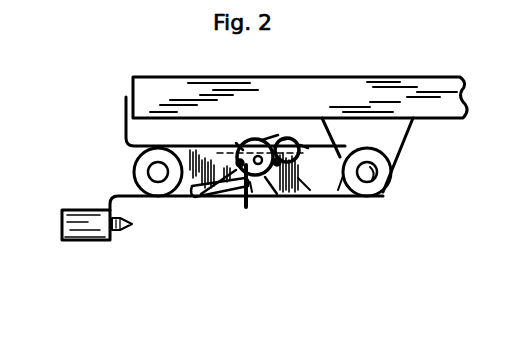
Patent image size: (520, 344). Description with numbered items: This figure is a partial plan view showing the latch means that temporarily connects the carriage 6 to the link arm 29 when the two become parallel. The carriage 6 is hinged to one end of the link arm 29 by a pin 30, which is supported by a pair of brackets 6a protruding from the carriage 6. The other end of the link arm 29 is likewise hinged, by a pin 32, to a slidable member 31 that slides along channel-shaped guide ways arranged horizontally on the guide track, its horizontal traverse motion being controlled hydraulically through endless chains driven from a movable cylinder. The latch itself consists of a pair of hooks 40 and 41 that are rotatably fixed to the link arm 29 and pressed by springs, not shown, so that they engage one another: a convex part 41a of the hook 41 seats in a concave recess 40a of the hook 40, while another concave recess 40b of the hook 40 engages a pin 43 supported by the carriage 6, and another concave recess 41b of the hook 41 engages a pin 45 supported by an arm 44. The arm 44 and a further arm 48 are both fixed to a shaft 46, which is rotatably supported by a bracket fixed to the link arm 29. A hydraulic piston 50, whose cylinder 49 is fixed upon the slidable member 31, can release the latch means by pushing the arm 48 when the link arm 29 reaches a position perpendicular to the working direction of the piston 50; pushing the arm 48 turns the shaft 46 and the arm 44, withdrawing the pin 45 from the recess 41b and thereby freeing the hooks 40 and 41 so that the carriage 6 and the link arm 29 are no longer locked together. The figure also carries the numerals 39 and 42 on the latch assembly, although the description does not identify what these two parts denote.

The carriage 6 is at (437, 85).
The brackets 6a is at (398, 142).
The link arm 29 is at (338, 190).
The pin 30 is at (382, 188).
The slidable member 31 is at (120, 130).
The pin 32 is at (157, 172).
The pivot pin 39 is at (252, 192).
The hook 40 is at (247, 140).
The concave recess 40a is at (270, 136).
The concave recess 40b is at (235, 143).
The hook 41 is at (282, 140).
The convex part 41a is at (284, 140).
The concave recess 41b is at (308, 147).
The stop 42 is at (227, 137).
The pin 43 is at (227, 197).
The arm 44 is at (277, 190).
The pin 45 is at (310, 190).
The shaft 46 is at (236, 205).
The arm 48 is at (197, 197).
The cylinder 49 is at (88, 222).
The hydraulic piston 50 is at (112, 231).